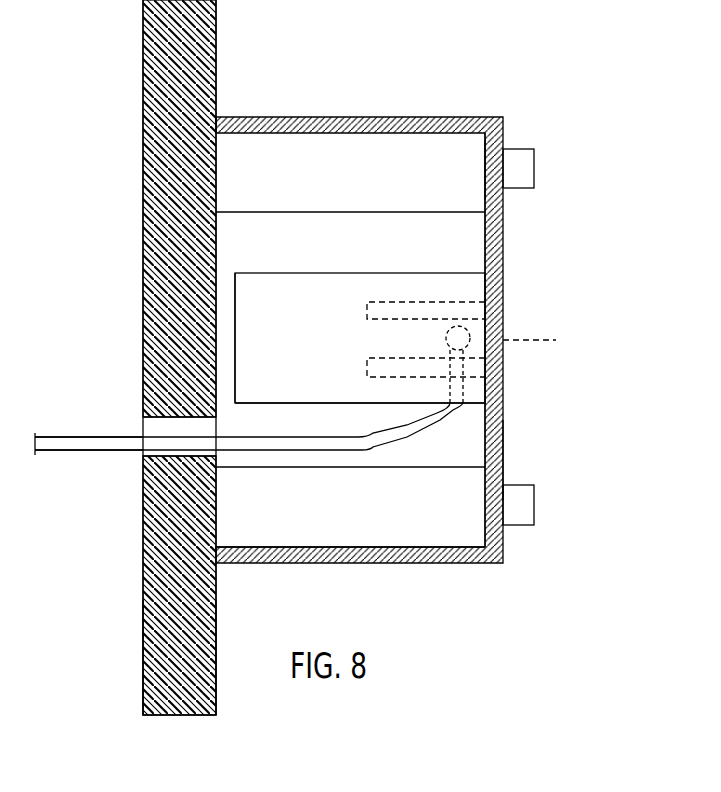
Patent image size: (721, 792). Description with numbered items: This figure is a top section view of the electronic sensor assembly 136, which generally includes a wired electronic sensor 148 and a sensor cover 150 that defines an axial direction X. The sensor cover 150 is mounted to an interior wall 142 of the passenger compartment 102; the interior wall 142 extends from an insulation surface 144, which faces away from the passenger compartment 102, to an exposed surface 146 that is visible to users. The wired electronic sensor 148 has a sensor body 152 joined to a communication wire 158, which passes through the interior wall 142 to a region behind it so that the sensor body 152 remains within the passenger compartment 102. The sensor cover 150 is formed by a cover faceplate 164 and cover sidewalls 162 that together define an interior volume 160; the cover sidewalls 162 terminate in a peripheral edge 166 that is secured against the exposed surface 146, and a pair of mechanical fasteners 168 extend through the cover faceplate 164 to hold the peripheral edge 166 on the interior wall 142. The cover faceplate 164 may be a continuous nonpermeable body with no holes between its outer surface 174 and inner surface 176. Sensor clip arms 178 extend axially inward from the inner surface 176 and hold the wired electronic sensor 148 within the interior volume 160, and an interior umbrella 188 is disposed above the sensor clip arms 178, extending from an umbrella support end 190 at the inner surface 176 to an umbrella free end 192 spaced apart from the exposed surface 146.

The passenger compartment 102 is at (690, 291).
The electronic sensor assembly 136 is at (336, 322).
The interior wall 142 is at (170, 380).
The insulation surface 144 is at (140, 643).
The exposed surface 146 is at (242, 674).
The wired electronic sensor 148 is at (363, 452).
The sensor cover 150 is at (503, 563).
The sensor body 152 is at (470, 346).
The communication wire 158 is at (97, 447).
The interior volume 160 is at (242, 247).
The cover sidewall 162 is at (350, 117).
The cover faceplate 164 is at (503, 252).
The peripheral edge 166 is at (212, 125).
The mechanical fasteners 168 is at (526, 160).
The outer surface 174 is at (507, 460).
The inner surface 176 is at (481, 163).
The sensor clip arms 178 is at (367, 366).
The interior umbrella 188 is at (247, 390).
The umbrella support end 190 is at (489, 294).
The umbrella free end 192 is at (231, 325).